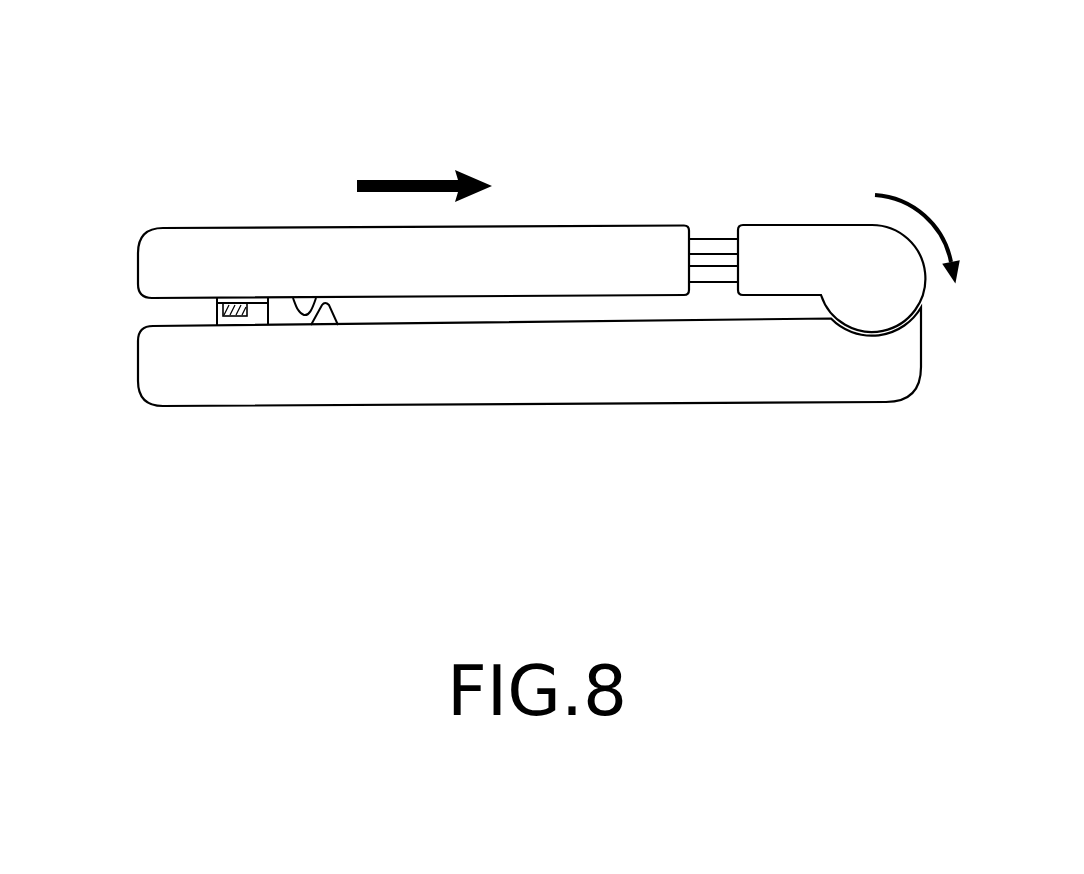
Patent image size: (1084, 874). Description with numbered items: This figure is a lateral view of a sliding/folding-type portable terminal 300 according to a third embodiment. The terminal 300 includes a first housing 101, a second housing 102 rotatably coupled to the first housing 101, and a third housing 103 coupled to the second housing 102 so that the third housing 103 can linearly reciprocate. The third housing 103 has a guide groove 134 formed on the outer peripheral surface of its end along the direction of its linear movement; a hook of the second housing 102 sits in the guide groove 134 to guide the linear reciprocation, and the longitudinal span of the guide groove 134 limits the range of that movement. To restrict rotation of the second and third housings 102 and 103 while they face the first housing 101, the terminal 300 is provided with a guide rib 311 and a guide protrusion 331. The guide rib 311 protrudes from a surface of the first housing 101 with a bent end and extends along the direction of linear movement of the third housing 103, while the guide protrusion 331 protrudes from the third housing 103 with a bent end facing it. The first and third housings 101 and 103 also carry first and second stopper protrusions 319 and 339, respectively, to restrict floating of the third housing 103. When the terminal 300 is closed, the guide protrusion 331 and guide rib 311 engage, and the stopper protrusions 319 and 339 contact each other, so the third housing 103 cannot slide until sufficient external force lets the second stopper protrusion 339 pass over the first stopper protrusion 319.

The sliding/folding-type portable terminal 300 is at (335, 53).
The first housing 101 is at (749, 414).
The second housing 102 is at (815, 216).
The third housing 103 is at (597, 216).
The guide groove 134 is at (716, 258).
The guide rib 311 is at (156, 395).
The first stopper protrusion 319 is at (323, 325).
The guide protrusion 331 is at (233, 318).
The second stopper protrusion 339 is at (306, 306).